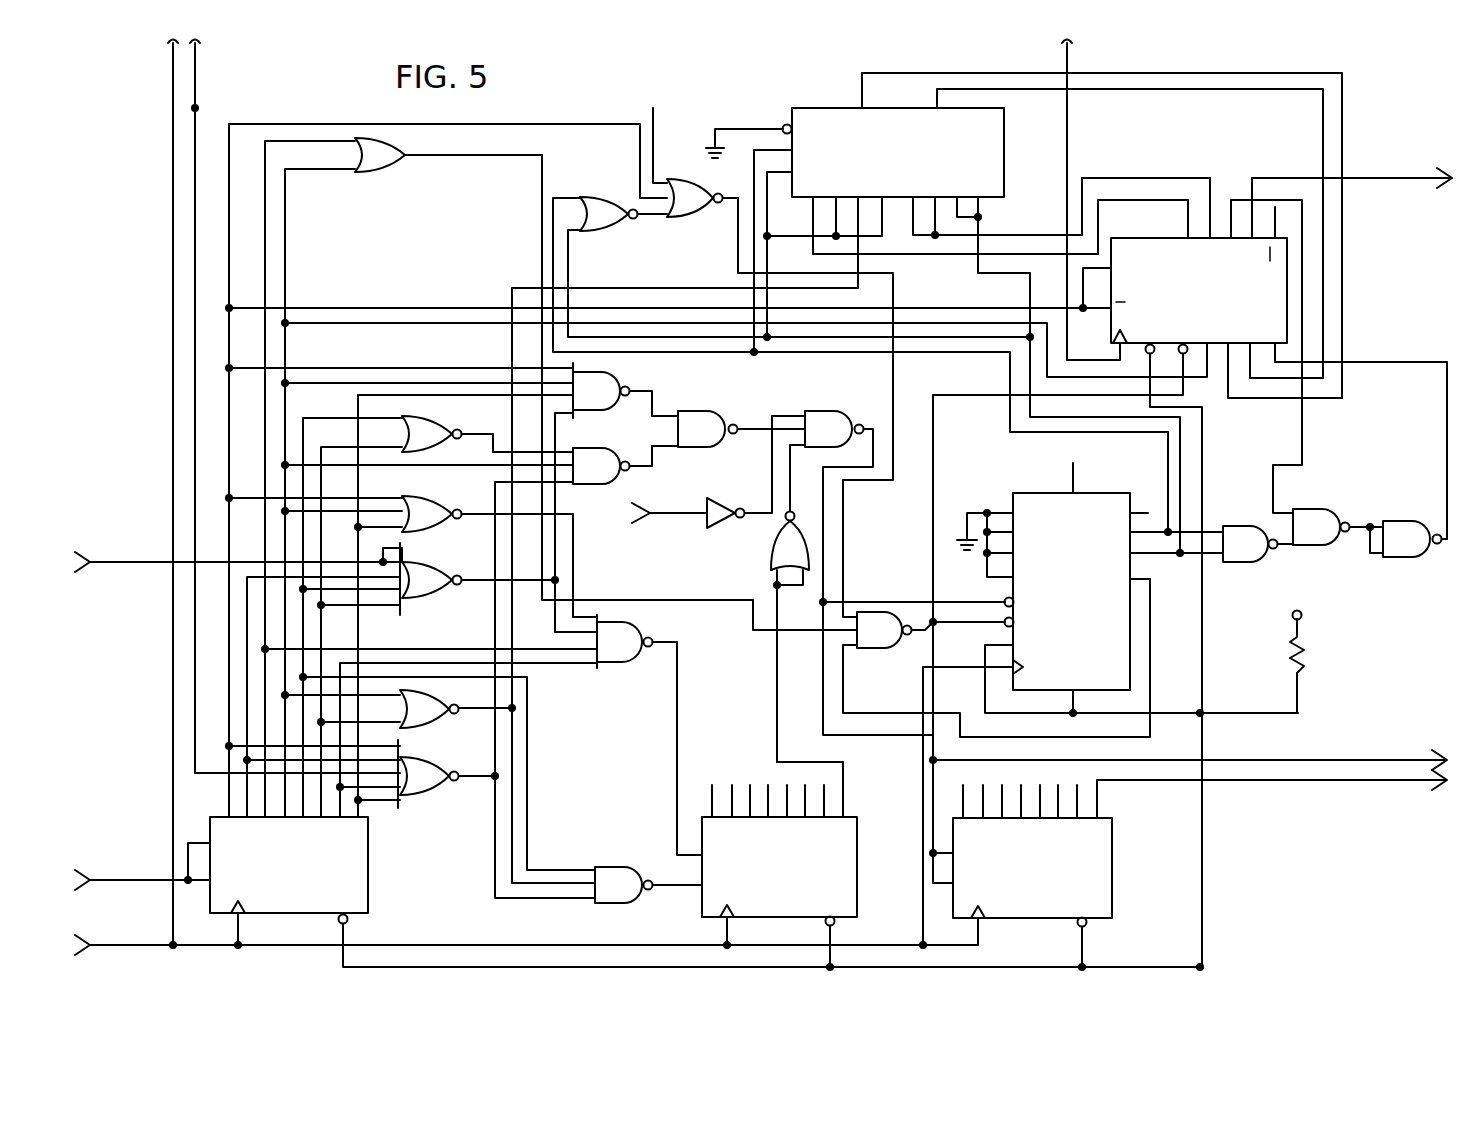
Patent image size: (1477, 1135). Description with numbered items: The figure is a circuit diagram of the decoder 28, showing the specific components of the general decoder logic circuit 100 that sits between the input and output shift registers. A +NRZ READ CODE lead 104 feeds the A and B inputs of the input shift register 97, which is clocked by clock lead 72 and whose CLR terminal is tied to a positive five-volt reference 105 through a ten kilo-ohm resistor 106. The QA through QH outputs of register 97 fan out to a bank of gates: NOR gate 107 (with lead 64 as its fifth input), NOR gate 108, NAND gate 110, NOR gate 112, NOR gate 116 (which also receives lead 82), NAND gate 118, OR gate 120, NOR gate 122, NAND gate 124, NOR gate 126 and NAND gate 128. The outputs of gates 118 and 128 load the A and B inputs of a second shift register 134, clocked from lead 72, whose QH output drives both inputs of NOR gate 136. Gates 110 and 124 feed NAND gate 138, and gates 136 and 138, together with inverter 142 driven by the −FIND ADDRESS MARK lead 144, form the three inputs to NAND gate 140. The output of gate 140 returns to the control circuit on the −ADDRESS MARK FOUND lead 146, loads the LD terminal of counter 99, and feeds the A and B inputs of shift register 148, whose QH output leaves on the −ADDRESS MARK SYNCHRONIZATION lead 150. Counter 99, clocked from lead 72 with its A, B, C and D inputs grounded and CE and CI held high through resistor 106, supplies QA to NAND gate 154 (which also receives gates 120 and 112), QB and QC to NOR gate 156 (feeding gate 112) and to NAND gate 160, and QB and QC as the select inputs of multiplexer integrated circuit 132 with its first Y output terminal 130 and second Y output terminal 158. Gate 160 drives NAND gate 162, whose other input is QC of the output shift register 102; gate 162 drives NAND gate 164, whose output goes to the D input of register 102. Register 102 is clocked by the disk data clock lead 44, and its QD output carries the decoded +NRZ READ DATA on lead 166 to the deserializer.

The decoder 28 is at (1368, 325).
The lead 44 is at (1069, 60).
The lead 64 is at (197, 125).
The clock lead 72 is at (173, 160).
The lead 82 is at (133, 560).
The shift register 97 is at (708, 547).
The counter 99 is at (1070, 704).
The decoder logic circuit 100 is at (708, 130).
The shift register 102 is at (1188, 583).
The lead 104 is at (127, 880).
The reference 105 is at (1302, 614).
The resistor 106 is at (1304, 660).
The NOR gate 107 is at (430, 784).
The NOR gate 108 is at (428, 500).
The NAND gate 110 is at (606, 378).
The NOR gate 112 is at (688, 212).
The NOR gate 116 is at (428, 562).
The NAND gate 118 is at (622, 655).
The OR gate 120 is at (392, 160).
The NOR gate 122 is at (432, 716).
The NAND gate 124 is at (606, 453).
The NOR gate 126 is at (434, 428).
The NAND gate 128 is at (610, 866).
The first output Y terminal 130 is at (858, 108).
The multiplexer integrated circuit 132 is at (859, 495).
The shift register 134 is at (779, 864).
The NOR gate 136 is at (771, 558).
The NAND gate 138 is at (705, 415).
The NAND gate 140 is at (826, 415).
The inverter 142 is at (708, 504).
The lead 144 is at (667, 522).
The lead 146 is at (1358, 758).
The shift register 148 is at (1032, 876).
The lead 150 is at (1352, 783).
The NAND gate 154 is at (887, 648).
The NOR gate 156 is at (600, 222).
The second Y output terminal 158 is at (935, 108).
The NAND gate 160 is at (1262, 556).
The NAND gate 162 is at (1330, 516).
The NAND gate 164 is at (1425, 552).
The lead 166 is at (1391, 178).